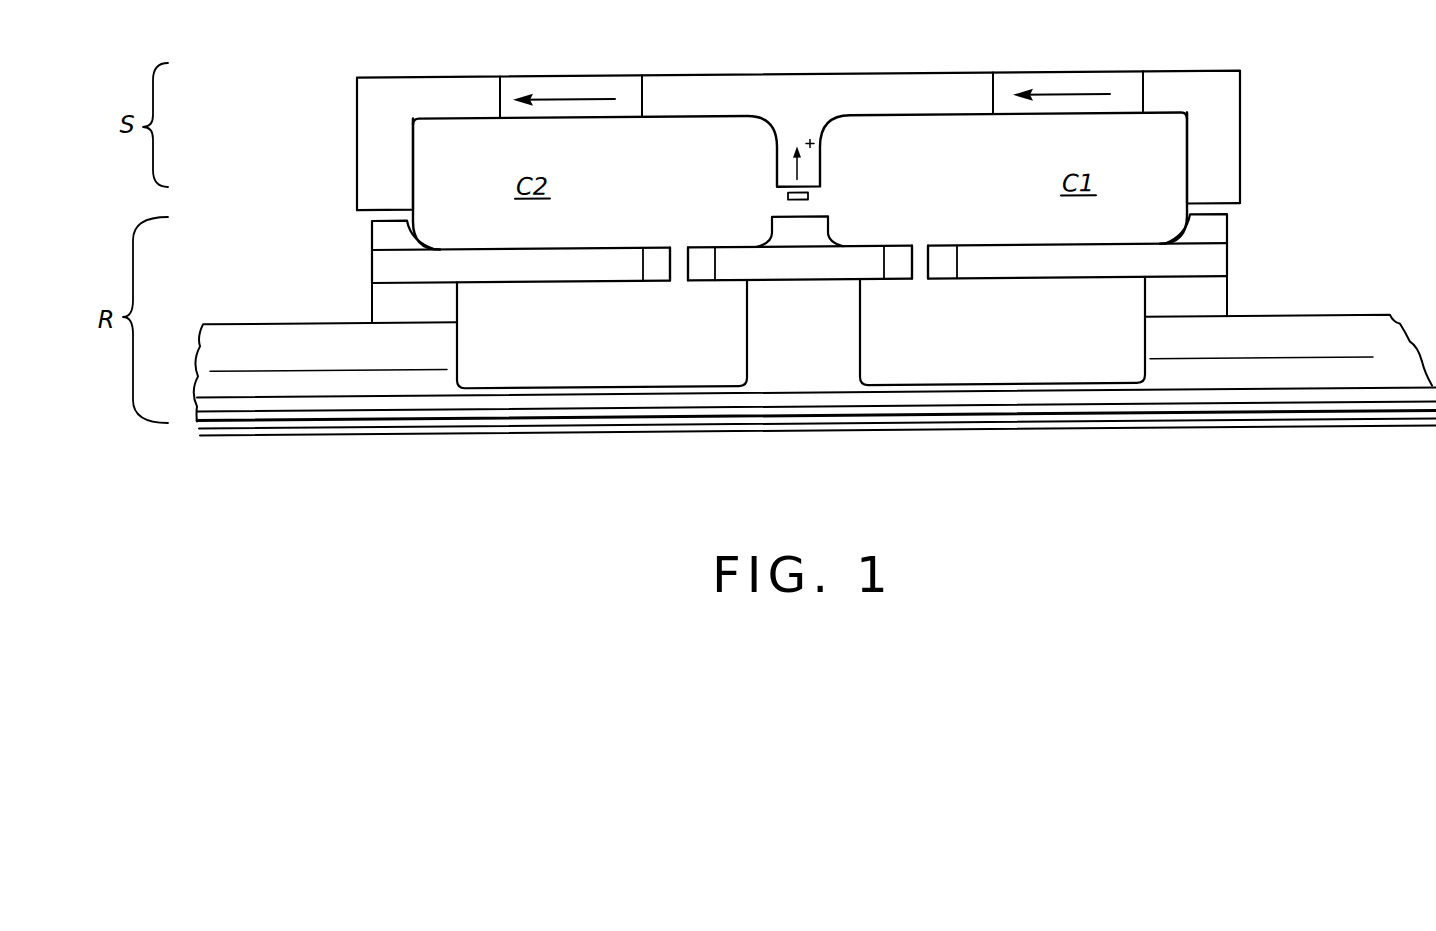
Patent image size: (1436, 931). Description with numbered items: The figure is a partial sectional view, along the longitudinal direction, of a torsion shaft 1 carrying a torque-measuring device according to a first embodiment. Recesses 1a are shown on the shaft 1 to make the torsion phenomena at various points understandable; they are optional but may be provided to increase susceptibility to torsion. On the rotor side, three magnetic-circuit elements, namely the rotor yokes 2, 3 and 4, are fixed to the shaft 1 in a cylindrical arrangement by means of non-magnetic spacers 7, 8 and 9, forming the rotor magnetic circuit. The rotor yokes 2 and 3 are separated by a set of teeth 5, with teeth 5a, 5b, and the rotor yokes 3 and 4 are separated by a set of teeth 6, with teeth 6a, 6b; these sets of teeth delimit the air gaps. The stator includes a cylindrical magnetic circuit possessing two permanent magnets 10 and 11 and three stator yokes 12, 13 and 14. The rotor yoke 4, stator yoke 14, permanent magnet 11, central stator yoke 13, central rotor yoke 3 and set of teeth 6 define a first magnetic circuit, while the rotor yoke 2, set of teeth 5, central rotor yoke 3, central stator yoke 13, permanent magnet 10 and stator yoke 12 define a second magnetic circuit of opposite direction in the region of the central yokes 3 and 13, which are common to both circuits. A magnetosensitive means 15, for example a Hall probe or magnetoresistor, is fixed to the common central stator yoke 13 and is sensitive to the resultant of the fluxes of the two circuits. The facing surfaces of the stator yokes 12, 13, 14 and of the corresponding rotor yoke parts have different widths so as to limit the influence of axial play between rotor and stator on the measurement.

The torsion shaft 1 is at (343, 405).
The recesses 1a is at (582, 377).
The rotor yoke 2 is at (540, 271).
The central rotor yoke 3 is at (850, 257).
The rotor yoke 4 is at (1215, 265).
The set of teeth 5 is at (676, 226).
The teeth 5a is at (650, 284).
The teeth 5b is at (693, 283).
The set of teeth 6 is at (942, 224).
The teeth 6a is at (948, 290).
The teeth 6b is at (900, 284).
The non-magnetic spacer 7 is at (385, 298).
The non-magnetic spacer 8 is at (770, 308).
The non-magnetic spacer 9 is at (1210, 305).
The permanent magnet 10 is at (592, 90).
The permanent magnet 11 is at (1037, 81).
The stator yoke 12 is at (373, 158).
The central stator yoke 13 is at (775, 168).
The stator yoke 14 is at (1220, 140).
The magnetosensitive means 15 is at (808, 199).